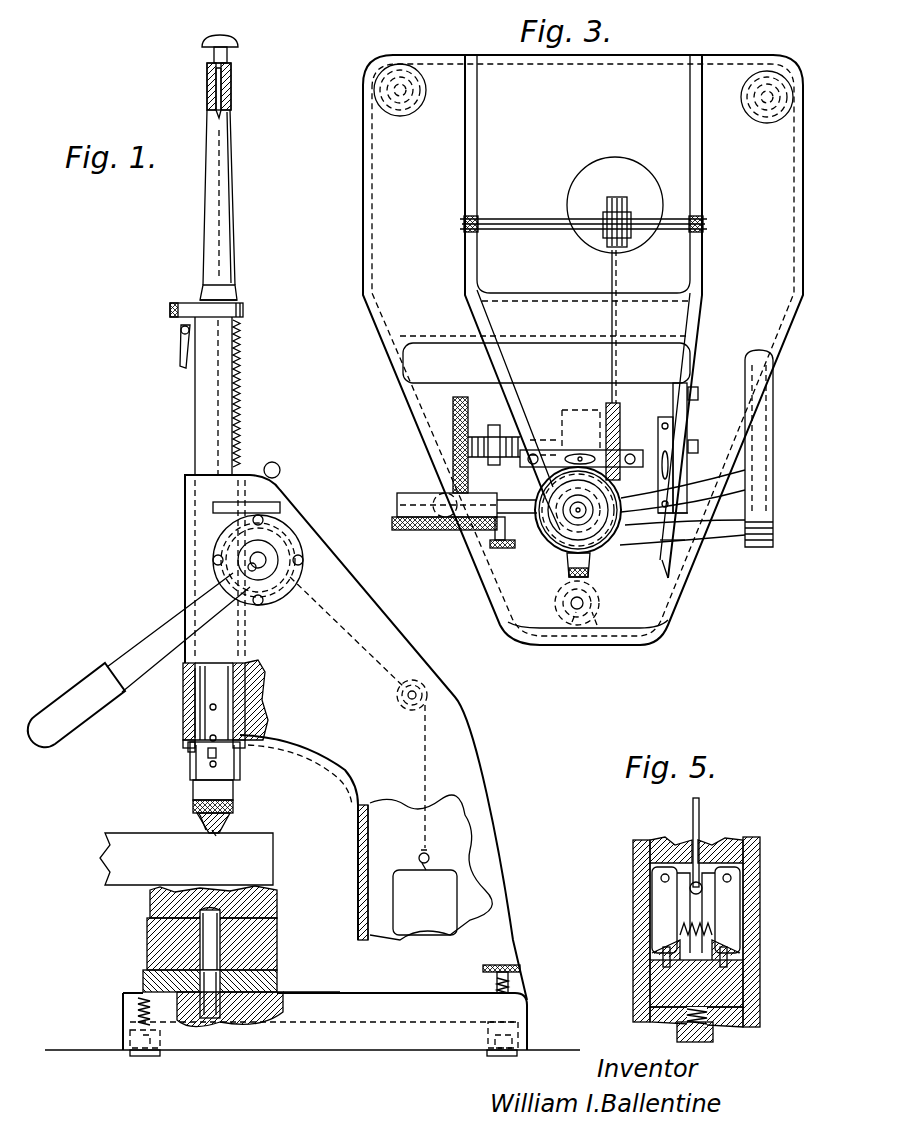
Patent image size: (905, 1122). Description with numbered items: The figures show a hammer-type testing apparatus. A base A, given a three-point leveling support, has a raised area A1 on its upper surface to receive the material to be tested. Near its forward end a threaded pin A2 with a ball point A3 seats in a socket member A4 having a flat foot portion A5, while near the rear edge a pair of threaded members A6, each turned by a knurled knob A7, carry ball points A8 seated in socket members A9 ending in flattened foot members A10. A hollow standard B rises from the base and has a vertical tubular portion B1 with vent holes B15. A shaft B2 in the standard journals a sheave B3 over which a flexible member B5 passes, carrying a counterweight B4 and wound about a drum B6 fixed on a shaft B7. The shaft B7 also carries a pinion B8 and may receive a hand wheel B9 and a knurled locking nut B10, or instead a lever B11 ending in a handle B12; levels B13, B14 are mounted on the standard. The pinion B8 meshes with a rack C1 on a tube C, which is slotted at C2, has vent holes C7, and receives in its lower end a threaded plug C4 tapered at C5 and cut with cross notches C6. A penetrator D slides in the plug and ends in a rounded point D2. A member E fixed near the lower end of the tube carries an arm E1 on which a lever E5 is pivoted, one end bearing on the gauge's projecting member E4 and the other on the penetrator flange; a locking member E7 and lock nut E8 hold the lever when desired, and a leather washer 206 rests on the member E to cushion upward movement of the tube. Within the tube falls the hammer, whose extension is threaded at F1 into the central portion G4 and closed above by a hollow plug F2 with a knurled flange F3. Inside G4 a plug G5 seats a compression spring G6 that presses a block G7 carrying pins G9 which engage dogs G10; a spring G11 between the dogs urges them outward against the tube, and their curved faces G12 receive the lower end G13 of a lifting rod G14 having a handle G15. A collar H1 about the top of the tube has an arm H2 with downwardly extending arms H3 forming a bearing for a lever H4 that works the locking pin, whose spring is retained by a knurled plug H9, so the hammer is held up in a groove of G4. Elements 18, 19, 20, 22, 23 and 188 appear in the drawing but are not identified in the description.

In FIG. 1, the base portion A is at (310, 1040).
In FIG. 3, the base portion A is at (363, 215).
In FIG. 1, the raised area A1 is at (305, 992).
In FIG. 3, the raised area A1 is at (426, 345).
In FIG. 1, the threaded pin A2 is at (140, 1000).
In FIG. 3, the threaded pin A2 is at (575, 622).
In FIG. 1, the ball point A3 is at (150, 1056).
In FIG. 1, the socket member A4 is at (133, 1025).
In FIG. 3, the socket member A4 is at (598, 625).
In FIG. 1, the foot portion A5 is at (140, 1055).
In FIG. 3, the foot portion A5 is at (598, 601).
In FIG. 1, the threaded members A6 is at (497, 983).
In FIG. 3, the threaded members A6 is at (407, 86).
In FIG. 1, the knurled thumb nut or knob A7 is at (500, 965).
In FIG. 3, the knurled thumb nut or knob A7 is at (410, 117).
In FIG. 1, the ball point A8 is at (515, 1043).
In FIG. 1, the socket member A9 is at (490, 1040).
In FIG. 3, the socket member A9 is at (410, 99).
In FIG. 1, the foot member A10 is at (493, 1057).
In FIG. 3, the foot member A10 is at (395, 116).
In FIG. 1, the standard B is at (358, 862).
In FIG. 3, the standard B is at (470, 126).
In FIG. 1, the tubular portion B1 is at (185, 536).
In FIG. 3, the tubular portion B1 is at (672, 545).
In FIG. 1, the shaft B2 is at (410, 694).
In FIG. 3, the shaft B2 is at (523, 217).
In FIG. 1, the sheave B3 is at (400, 706).
In FIG. 3, the sheave B3 is at (626, 195).
In FIG. 1, the counterweight B4 is at (458, 886).
In FIG. 3, the counterweight B4 is at (600, 170).
In FIG. 1, the flexible member B5 is at (428, 818).
In FIG. 3, the flexible member B5 is at (612, 264).
In FIG. 1, the drum B6 is at (288, 540).
In FIG. 3, the drum B6 is at (620, 410).
In FIG. 1, the shaft B7 is at (262, 562).
In FIG. 3, the shaft B7 is at (700, 420).
In FIG. 3, the pinion B8 is at (580, 410).
In FIG. 3, the hand or adjusting wheel B9 is at (762, 527).
In FIG. 3, the locking nut B10 is at (460, 397).
In FIG. 1, the lever B11 is at (153, 633).
In FIG. 1, the handle B12 is at (80, 690).
In FIG. 1, the level B13 is at (272, 463).
In FIG. 3, the level B13 is at (543, 450).
In FIG. 1, the level B14 is at (262, 500).
In FIG. 3, the level B14 is at (672, 515).
In FIG. 1, the vent holes B15 is at (190, 690).
In FIG. 1, the tube C is at (195, 412).
In FIG. 3, the tube C is at (562, 545).
In FIG. 5, the tube C is at (760, 860).
In FIG. 1, the rack C1 is at (240, 432).
In FIG. 1, the slot C2 is at (183, 744).
In FIG. 1, the threaded plug C4 is at (235, 806).
In FIG. 1, the tapered portion C5 is at (232, 822).
In FIG. 1, the cross notches C6 is at (200, 823).
In FIG. 1, the vent holes C7 is at (212, 738).
In FIG. 1, the percussion or penetrator member D is at (210, 762).
In FIG. 1, the point D2 is at (216, 833).
In FIG. 1, the member E is at (240, 772).
In FIG. 3, the member E is at (527, 535).
In FIG. 3, the arm E1 is at (505, 562).
In FIG. 3, the projecting member E4 is at (445, 505).
In FIG. 3, the lever E5 is at (520, 505).
In FIG. 3, the locking member E7 is at (490, 527).
In FIG. 3, the lock nut E8 is at (492, 550).
In FIG. 1, the threaded portion F1 is at (232, 207).
In FIG. 1, the hollow plug member F2 is at (231, 75).
In FIG. 1, the knurled flange F3 is at (207, 66).
In FIG. 1, the central portion of hammer G4 is at (237, 298).
In FIG. 5, the central portion of hammer G4 is at (730, 845).
In FIG. 5, the threaded plug G5 is at (715, 1036).
In FIG. 5, the compression spring G6 is at (710, 1016).
In FIG. 5, the block G7 is at (735, 988).
In FIG. 5, the pins G9 is at (662, 960).
In FIG. 5, the dogs G10 is at (665, 900).
In FIG. 5, the compression spring G11 is at (693, 927).
In FIG. 5, the curved faces G12 is at (683, 873).
In FIG. 5, the lower end of lifting rod G13 is at (705, 890).
In FIG. 1, the lifting rod G14 is at (222, 96).
In FIG. 5, the lifting rod G14 is at (700, 800).
In FIG. 1, the lifting handle G15 is at (213, 46).
In FIG. 3, the lifting handle G15 is at (612, 521).
In FIG. 1, the collar H1 is at (243, 312).
In FIG. 3, the collar H1 is at (682, 545).
In FIG. 1, the projecting arm H2 is at (200, 303).
In FIG. 3, the projecting arm H2 is at (594, 557).
In FIG. 1, the downwardly extending arms H3 is at (181, 330).
In FIG. 1, the lever H4 is at (180, 360).
In FIG. 1, the knurled threaded plug H9 is at (170, 305).
In FIG. 3, the knurled threaded plug H9 is at (568, 591).
In FIG. 1, the die 18 is at (270, 892).
In FIG. 1, the die block 19 is at (272, 935).
In FIG. 1, the die plate 20 is at (275, 975).
In FIG. 1, the pin 22 is at (205, 935).
In FIG. 1, the pin 23 is at (212, 1020).
In FIG. 1, the workpiece 188 is at (105, 852).
In FIG. 1, the leather washer 206 is at (190, 750).